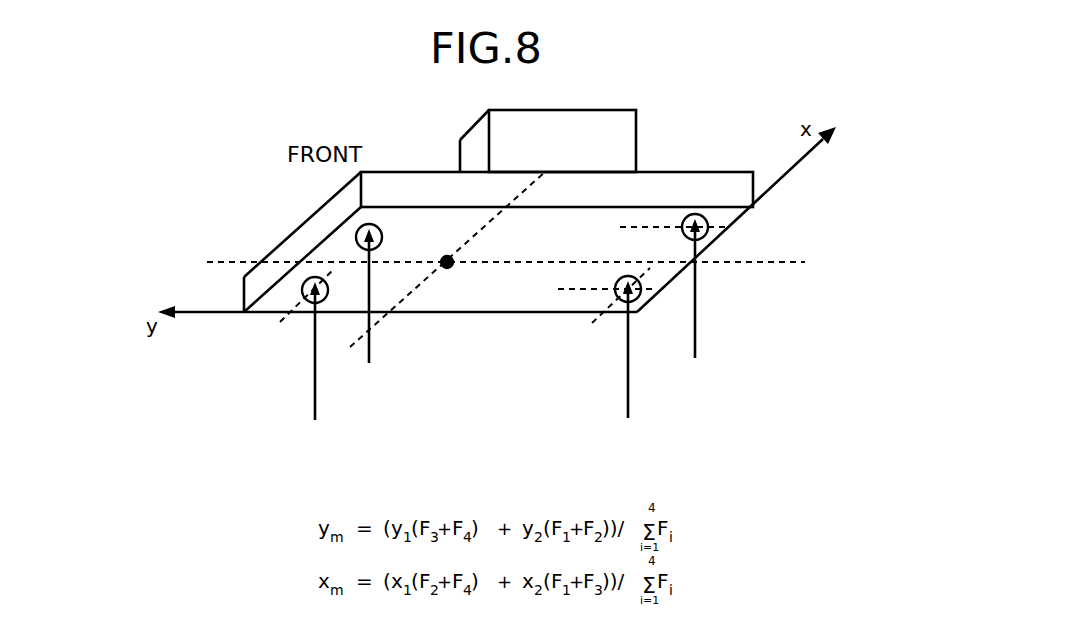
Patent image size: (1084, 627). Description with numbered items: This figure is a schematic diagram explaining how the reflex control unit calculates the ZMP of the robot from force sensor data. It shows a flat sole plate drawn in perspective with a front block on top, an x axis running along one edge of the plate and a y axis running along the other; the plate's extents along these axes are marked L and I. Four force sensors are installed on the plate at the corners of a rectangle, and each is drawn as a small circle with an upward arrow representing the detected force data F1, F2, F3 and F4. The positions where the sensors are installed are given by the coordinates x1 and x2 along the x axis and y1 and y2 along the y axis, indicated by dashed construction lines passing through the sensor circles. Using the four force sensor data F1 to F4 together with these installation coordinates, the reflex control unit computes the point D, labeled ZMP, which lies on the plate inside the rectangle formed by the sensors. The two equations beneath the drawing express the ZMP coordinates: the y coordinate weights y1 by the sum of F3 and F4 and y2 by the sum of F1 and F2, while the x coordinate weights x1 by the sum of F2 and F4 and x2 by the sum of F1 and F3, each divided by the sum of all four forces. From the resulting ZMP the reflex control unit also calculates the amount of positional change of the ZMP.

The force sensor data F1 is at (355, 298).
The force sensor data F2 is at (305, 351).
The force sensor data F3 is at (705, 289).
The force sensor data F4 is at (638, 349).
The ZMP point D is at (437, 253).
The zero moment point ZMP is at (449, 268).
The x coordinate of first sensor row x1 is at (678, 303).
The x coordinate of second sensor row x2 is at (747, 236).
The y coordinate of first sensor column y1 is at (577, 333).
The y coordinate of second sensor column y2 is at (269, 333).
The plate length L is at (204, 336).
The plate width I is at (785, 200).